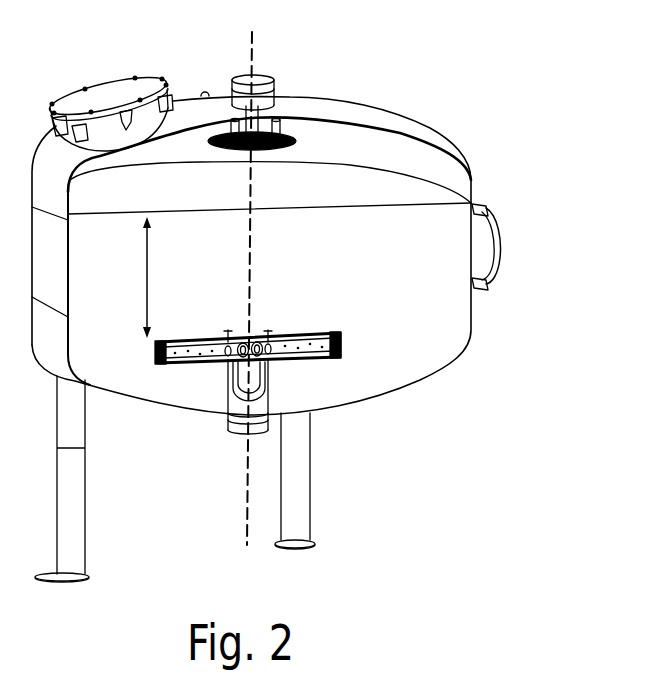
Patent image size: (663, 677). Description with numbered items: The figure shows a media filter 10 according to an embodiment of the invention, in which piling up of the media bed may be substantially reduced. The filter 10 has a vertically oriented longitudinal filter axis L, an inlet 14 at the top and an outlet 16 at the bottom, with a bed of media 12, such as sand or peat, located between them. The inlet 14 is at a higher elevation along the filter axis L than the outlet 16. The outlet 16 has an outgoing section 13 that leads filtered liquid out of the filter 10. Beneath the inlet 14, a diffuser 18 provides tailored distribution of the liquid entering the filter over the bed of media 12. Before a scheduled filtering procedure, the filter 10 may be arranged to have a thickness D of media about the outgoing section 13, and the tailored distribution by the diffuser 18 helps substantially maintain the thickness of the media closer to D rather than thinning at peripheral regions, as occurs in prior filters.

The media filter 10 is at (471, 84).
The bed of media 12 is at (420, 320).
The outgoing section 13 is at (383, 353).
The inlet 14 is at (257, 73).
The outlet 16 is at (248, 432).
The diffuser 18 is at (318, 147).
The longitudinal filter axis L is at (232, 278).
The thickness of media D is at (134, 277).